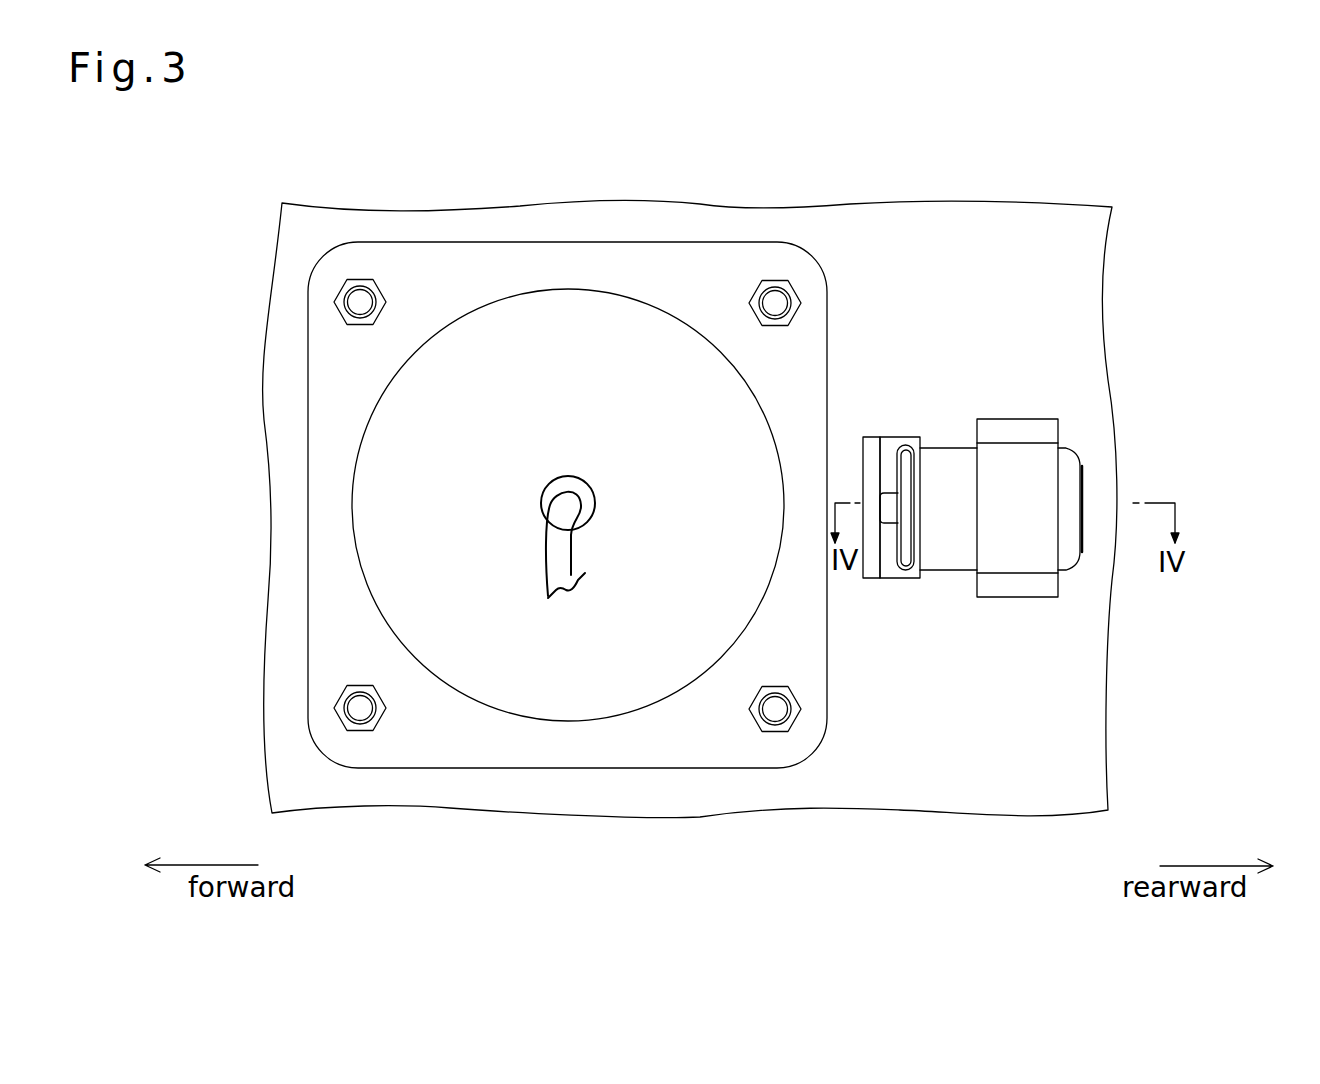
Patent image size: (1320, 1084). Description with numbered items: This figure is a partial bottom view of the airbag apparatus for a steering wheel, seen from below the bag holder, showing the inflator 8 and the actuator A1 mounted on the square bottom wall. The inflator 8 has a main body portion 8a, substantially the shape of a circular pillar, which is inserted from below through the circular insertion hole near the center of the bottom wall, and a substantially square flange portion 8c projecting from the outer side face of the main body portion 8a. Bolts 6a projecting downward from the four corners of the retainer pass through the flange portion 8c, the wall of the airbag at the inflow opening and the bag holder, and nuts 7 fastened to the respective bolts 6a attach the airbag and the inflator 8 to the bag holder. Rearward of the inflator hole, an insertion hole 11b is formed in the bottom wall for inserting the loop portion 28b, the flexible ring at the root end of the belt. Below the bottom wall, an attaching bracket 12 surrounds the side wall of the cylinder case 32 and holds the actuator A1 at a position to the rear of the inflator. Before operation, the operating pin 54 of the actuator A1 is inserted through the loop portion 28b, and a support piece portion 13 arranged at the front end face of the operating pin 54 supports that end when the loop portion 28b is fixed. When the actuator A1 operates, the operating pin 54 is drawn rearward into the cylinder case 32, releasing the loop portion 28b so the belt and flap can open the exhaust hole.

The inflator 8 is at (841, 310).
The flange portion 8c is at (682, 267).
The main body portion 8a is at (568, 323).
The nut 7 is at (343, 720).
The bolt 6a is at (771, 300).
The support piece portion 13 is at (870, 447).
The insertion hole 11b is at (891, 438).
The loop portion 28b is at (904, 445).
The operating pin 54 is at (884, 515).
The cylinder case 32 is at (950, 570).
The attaching bracket 12 is at (1017, 428).
The actuator A1 is at (1080, 430).